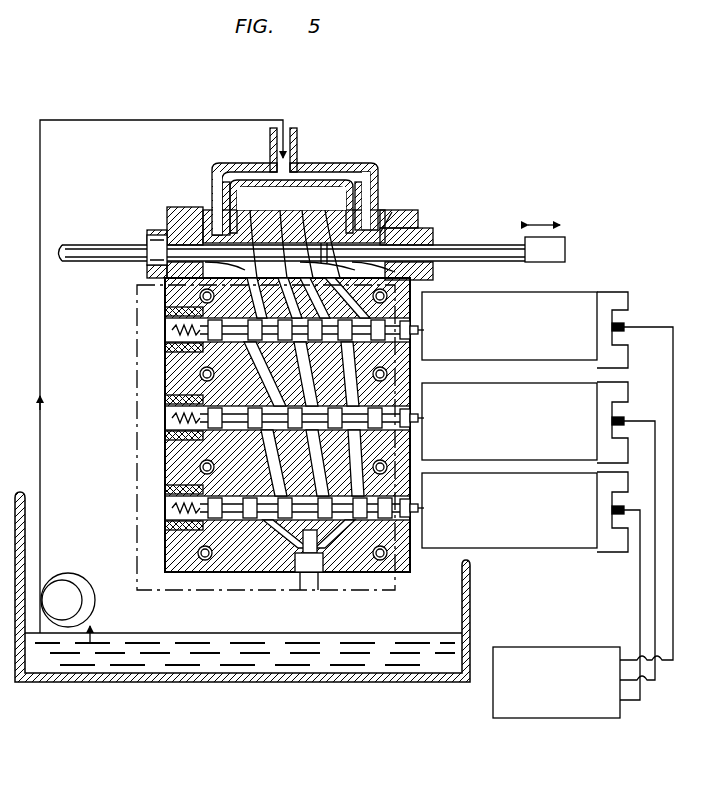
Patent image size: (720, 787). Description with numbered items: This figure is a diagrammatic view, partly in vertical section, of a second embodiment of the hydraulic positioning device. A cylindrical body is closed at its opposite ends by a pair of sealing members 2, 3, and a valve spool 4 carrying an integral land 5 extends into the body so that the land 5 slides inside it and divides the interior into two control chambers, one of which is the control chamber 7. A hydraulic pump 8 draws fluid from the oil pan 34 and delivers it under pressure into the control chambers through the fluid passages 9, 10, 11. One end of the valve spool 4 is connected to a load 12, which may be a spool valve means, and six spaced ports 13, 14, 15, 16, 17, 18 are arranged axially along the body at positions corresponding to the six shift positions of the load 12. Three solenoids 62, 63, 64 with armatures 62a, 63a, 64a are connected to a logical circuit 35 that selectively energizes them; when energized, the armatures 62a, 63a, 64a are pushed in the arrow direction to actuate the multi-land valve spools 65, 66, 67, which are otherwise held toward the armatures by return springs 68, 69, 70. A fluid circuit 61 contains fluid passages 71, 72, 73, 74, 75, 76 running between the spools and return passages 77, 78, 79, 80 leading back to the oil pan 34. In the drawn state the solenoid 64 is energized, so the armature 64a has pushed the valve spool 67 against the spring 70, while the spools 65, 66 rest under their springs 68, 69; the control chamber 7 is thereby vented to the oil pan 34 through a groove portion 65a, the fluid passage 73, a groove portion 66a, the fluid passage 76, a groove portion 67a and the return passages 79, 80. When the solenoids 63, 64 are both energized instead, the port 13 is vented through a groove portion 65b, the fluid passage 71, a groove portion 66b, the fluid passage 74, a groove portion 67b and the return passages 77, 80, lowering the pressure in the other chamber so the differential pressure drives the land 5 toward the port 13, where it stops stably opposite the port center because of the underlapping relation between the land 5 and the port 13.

The sealing member 2 is at (147, 271).
The sealing member 3 is at (427, 238).
The valve spool 4 is at (477, 235).
The land 5 is at (291, 207).
The control chamber 7 is at (360, 249).
The hydraulic pump 8 is at (85, 590).
The fluid passage 9 is at (127, 120).
The fluid passage 10 is at (244, 181).
The fluid passage 11 is at (325, 170).
The load 12 is at (566, 250).
The port 13 is at (250, 233).
The port 14 is at (275, 233).
The port 15 is at (303, 233).
The port 16 is at (366, 233).
The port 17 is at (395, 240).
The port 18 is at (420, 283).
The oil pan 34 is at (245, 678).
The logical circuit 35 is at (565, 720).
The fluid circuit 61 is at (172, 598).
The solenoid 62 is at (563, 293).
The armature 62a is at (426, 335).
The solenoid 63 is at (563, 383).
The armature 63a is at (426, 428).
The solenoid 64 is at (548, 535).
The armature 64a is at (426, 518).
The valve spool 65 is at (420, 338).
The groove portion 65a is at (420, 300).
The groove portion 65b is at (172, 363).
The valve spool 66 is at (410, 398).
The groove portion 66a is at (415, 440).
The groove portion 66b is at (275, 432).
The valve spool 67 is at (416, 558).
The groove portion 67a is at (350, 530).
The groove portion 67b is at (270, 523).
The return spring 68 is at (172, 327).
The return spring 69 is at (172, 424).
The return spring 70 is at (205, 512).
The fluid passage 71 is at (254, 374).
The fluid passage 72 is at (294, 374).
The fluid passage 73 is at (412, 374).
The fluid passage 74 is at (260, 463).
The fluid passage 75 is at (304, 463).
The fluid passage 76 is at (412, 486).
The return passage 77 is at (249, 573).
The return passage 78 is at (290, 528).
The return passage 79 is at (330, 568).
The return passage 80 is at (308, 575).